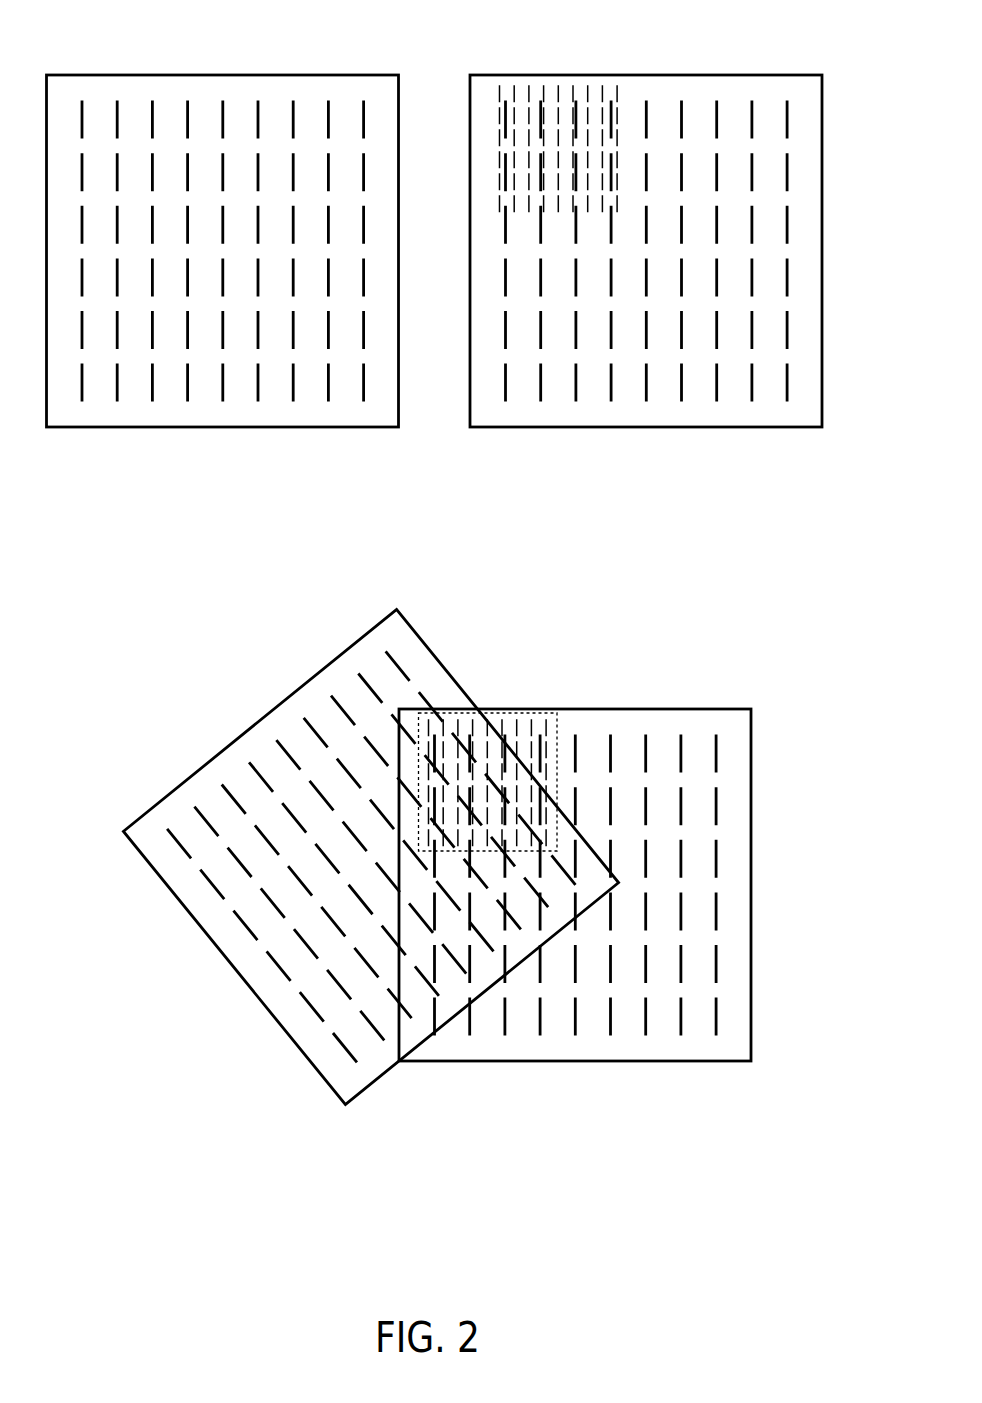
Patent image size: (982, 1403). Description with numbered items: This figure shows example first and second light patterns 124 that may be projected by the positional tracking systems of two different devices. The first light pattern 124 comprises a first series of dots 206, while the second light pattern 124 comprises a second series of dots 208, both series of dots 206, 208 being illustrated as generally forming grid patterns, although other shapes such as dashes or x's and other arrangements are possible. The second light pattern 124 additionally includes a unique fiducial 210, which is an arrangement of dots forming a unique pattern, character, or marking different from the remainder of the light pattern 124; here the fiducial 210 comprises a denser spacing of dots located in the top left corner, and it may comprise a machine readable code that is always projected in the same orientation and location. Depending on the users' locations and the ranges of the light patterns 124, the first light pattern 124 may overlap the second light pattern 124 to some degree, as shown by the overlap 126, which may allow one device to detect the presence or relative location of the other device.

The light pattern 124 is at (322, 75).
The first series of dots 206 is at (363, 177).
The second series of dots 208 is at (787, 177).
The unique fiducial 210 is at (529, 94).
The overlap 126 is at (485, 917).